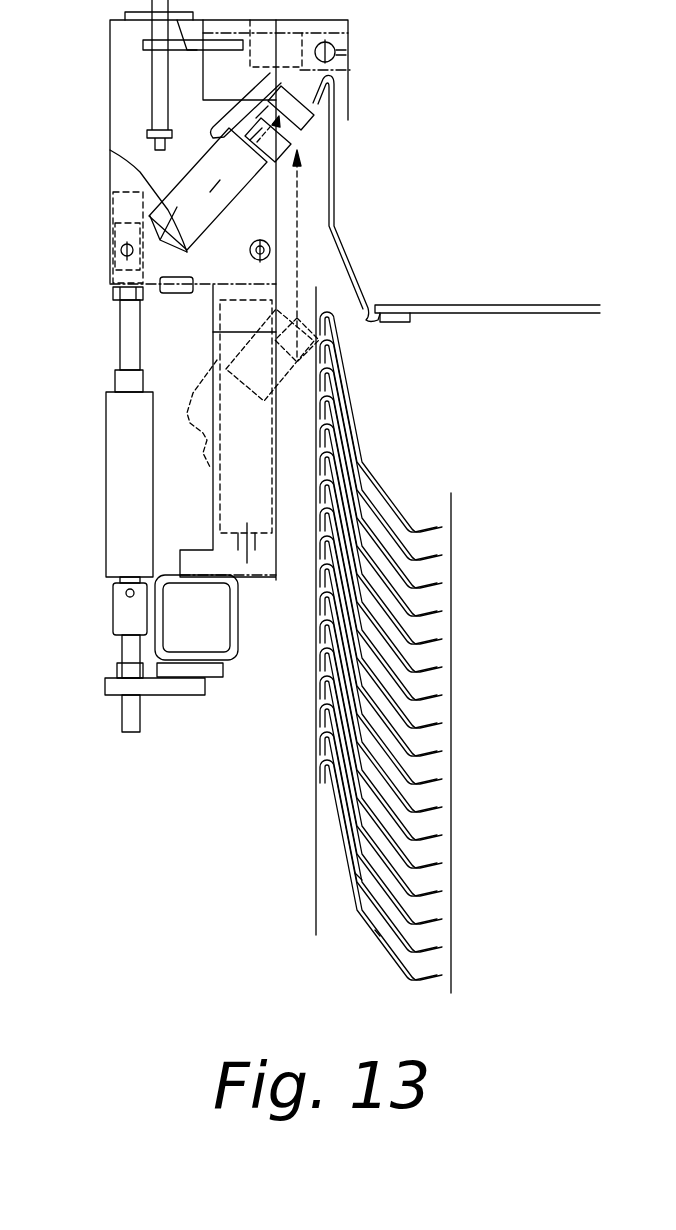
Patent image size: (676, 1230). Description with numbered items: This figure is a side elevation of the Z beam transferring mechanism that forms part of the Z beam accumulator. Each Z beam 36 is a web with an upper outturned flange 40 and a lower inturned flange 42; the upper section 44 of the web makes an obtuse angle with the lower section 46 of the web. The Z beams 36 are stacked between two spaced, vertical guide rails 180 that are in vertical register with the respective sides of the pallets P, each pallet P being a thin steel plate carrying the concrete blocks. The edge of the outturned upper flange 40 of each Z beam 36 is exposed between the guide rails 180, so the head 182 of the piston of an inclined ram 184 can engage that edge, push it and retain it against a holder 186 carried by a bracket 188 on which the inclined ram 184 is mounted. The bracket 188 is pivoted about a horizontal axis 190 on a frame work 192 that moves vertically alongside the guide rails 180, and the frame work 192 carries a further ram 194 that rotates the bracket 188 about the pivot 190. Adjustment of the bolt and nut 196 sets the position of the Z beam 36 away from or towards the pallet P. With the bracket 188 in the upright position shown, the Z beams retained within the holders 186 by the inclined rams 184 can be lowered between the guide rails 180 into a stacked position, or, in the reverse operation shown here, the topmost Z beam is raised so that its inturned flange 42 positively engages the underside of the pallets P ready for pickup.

The Z beam 36 is at (332, 197).
The upper outturned flange 40 is at (332, 74).
The lower inturned flange 42 is at (398, 323).
The upper section of the web 44 is at (355, 873).
The lower section of the web 46 is at (375, 930).
The vertical guide rails 180 is at (451, 513).
The head of the piston 182 is at (305, 110).
The inclined ram 184 is at (187, 197).
The holder 186 is at (343, 99).
The bracket 188 is at (128, 117).
The horizontal axis 190 is at (272, 266).
The frame work 192 is at (215, 508).
The ram 194 is at (117, 467).
The bolt and nut 196 is at (145, 703).
The pallet P is at (537, 304).